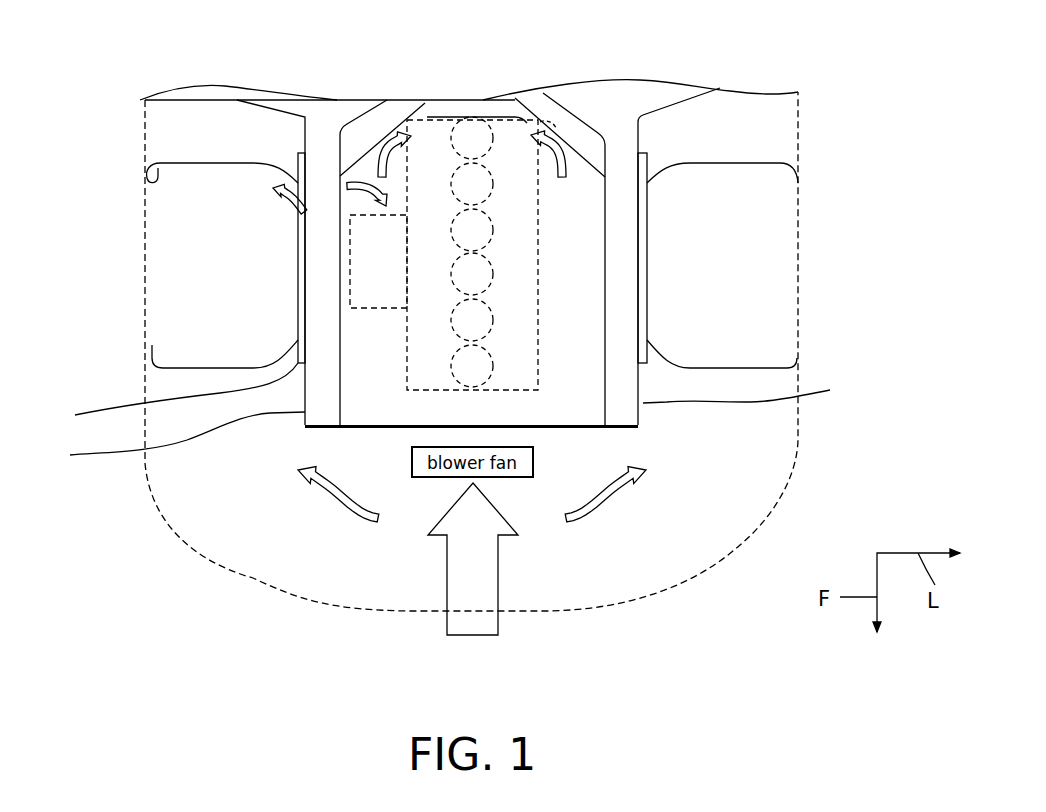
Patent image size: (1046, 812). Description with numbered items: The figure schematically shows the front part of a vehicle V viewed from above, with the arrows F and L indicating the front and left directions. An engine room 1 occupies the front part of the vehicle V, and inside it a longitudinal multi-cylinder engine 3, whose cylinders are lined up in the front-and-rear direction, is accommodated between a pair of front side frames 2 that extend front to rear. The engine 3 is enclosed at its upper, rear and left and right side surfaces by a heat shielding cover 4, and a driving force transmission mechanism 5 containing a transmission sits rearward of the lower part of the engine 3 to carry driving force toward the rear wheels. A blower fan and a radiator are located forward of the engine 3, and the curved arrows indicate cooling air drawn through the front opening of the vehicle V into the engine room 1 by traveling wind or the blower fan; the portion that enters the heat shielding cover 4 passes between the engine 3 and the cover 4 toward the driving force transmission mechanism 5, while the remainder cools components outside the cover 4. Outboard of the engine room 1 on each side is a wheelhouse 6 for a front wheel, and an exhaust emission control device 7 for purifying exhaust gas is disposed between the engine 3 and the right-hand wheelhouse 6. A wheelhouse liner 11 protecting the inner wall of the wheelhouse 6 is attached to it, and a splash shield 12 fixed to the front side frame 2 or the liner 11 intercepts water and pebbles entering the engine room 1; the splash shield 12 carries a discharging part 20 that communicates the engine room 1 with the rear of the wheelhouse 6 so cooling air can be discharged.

The engine room 1 is at (355, 128).
The front side frames 2 is at (448, 425).
The multi-cylinder engine 3 is at (553, 125).
The heat shielding cover 4 is at (398, 130).
The driving force transmission mechanism 5 is at (423, 100).
The wheelhouses 6 is at (147, 195).
The exhaust emission control device 7 is at (380, 308).
The wheelhouse liner 11 is at (145, 180).
The splash shield 12 is at (171, 395).
The discharging part 20 is at (392, 180).
The vehicle V is at (798, 440).